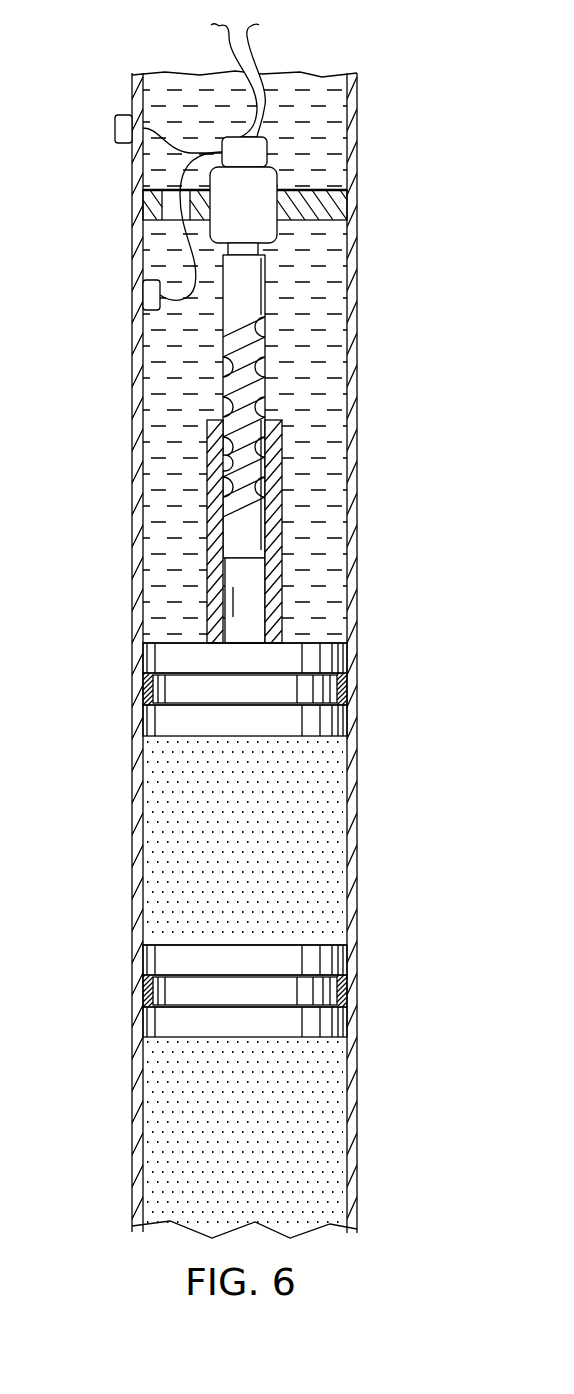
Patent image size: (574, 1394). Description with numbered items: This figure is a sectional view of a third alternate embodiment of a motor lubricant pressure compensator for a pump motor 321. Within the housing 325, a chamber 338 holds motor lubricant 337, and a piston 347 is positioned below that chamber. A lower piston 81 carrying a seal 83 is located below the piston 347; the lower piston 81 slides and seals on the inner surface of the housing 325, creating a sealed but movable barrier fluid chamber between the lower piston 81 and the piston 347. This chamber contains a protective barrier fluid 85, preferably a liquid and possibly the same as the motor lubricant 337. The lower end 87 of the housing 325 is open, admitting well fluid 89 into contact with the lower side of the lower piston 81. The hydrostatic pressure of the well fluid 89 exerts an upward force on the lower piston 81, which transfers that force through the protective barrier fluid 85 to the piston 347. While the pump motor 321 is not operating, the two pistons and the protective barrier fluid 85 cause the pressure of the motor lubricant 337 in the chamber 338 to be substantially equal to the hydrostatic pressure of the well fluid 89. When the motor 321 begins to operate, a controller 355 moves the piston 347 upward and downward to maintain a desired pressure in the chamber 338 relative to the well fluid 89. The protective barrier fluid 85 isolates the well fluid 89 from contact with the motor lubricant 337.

The pump motor 321 is at (124, 384).
The housing 325 is at (357, 452).
The motor lubricant 337 is at (340, 397).
The chamber 338 is at (338, 580).
The piston 347 is at (335, 652).
The controller 355 is at (267, 152).
The protective barrier fluid 85 is at (342, 868).
The lower piston 81 is at (335, 965).
The seal 83 is at (345, 997).
The well fluid 89 is at (338, 1118).
The lower end 87 is at (333, 1226).